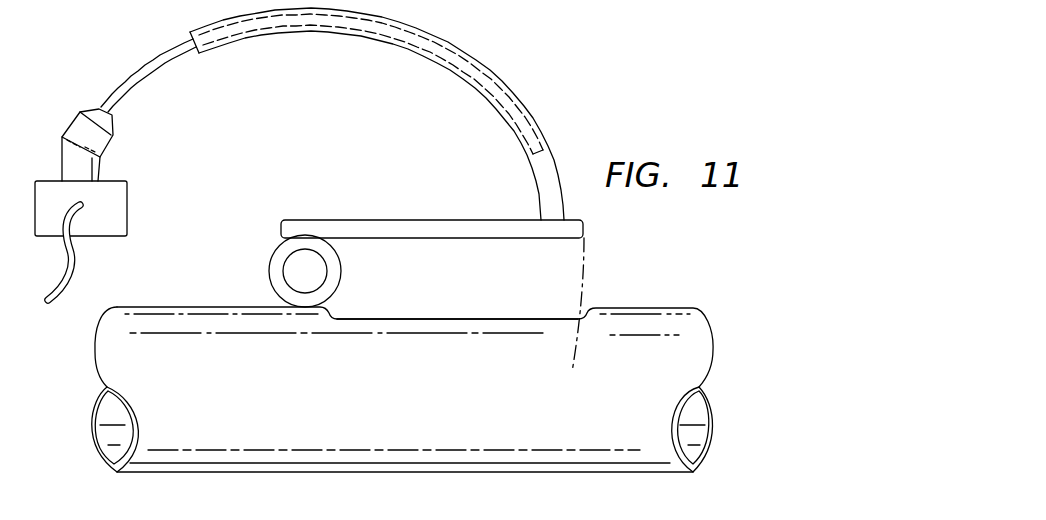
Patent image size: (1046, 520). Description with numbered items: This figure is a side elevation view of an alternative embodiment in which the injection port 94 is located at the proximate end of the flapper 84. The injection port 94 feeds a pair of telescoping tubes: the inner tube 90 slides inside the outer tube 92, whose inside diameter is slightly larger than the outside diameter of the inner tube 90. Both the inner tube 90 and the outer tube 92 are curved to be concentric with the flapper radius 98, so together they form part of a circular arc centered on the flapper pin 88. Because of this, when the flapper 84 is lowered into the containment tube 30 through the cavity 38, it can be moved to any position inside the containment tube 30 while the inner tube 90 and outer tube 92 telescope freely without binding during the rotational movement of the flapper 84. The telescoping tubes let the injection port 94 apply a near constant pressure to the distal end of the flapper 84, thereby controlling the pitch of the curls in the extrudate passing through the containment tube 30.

The containment tube 30 is at (645, 306).
The cavity 38 is at (518, 318).
The flapper 84 is at (389, 213).
The flapper pin 88 is at (318, 268).
The inner tube 90 is at (139, 67).
The outer tube 92 is at (490, 80).
The injection port 94 is at (73, 120).
The flapper radius 98 is at (570, 352).